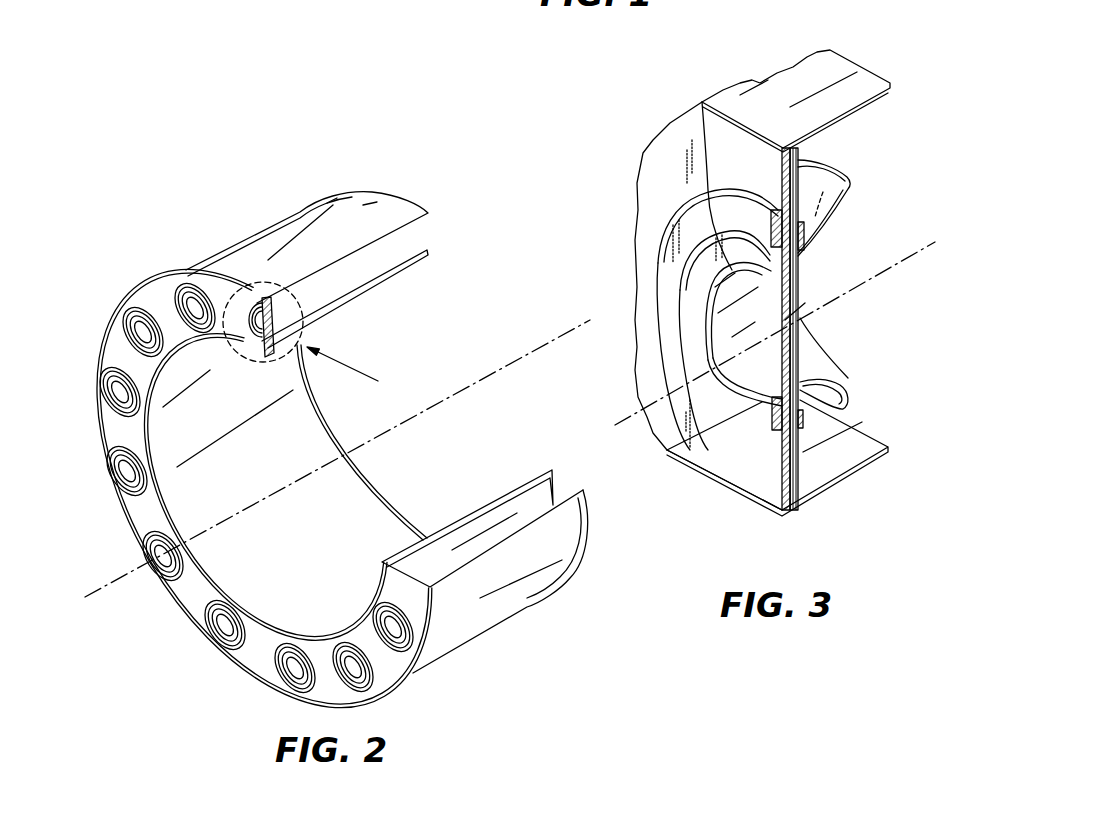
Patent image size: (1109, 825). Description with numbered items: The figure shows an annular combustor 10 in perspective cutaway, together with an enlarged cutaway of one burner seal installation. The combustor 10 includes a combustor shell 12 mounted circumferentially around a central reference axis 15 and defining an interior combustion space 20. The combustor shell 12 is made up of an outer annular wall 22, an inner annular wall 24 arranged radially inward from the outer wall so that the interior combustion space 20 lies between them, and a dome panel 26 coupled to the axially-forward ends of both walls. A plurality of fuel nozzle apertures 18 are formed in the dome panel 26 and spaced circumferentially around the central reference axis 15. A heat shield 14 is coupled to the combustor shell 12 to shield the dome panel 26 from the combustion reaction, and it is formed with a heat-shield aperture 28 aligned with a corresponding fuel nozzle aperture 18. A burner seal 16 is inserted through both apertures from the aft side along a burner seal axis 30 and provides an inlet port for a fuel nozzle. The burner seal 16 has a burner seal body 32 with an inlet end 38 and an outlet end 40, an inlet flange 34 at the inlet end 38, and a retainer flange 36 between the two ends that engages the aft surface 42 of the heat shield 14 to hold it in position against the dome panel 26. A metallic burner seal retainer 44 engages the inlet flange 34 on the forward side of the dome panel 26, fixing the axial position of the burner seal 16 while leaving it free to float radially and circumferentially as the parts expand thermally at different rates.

In FIG. 2, the combustor 10 is at (116, 202).
In FIG. 2, the combustor shell 12 is at (325, 213).
In FIG. 2, the heat shield 14 is at (273, 369).
In FIG. 3, the heat shield 14 is at (814, 183).
In FIG. 2, the central reference axis 15 is at (117, 578).
In FIG. 2, the burner seal 16 is at (247, 287).
In FIG. 3, the burner seal 16 is at (869, 377).
In FIG. 2, the fuel nozzle aperture 18 is at (245, 342).
In FIG. 3, the fuel nozzle aperture 18 is at (774, 439).
In FIG. 2, the interior combustion space 20 is at (325, 261).
In FIG. 3, the interior combustion space 20 is at (806, 281).
In FIG. 2, the outer annular wall 22 is at (298, 233).
In FIG. 3, the outer annular wall 22 is at (832, 64).
In FIG. 2, the inner annular wall 24 is at (398, 260).
In FIG. 3, the inner annular wall 24 is at (865, 455).
In FIG. 2, the dome panel 26 is at (117, 343).
In FIG. 3, the dome panel 26 is at (667, 140).
In FIG. 3, the heat-shield aperture 28 is at (818, 374).
In FIG. 3, the burner seal axis 30 is at (897, 267).
In FIG. 3, the burner seal body 32 is at (800, 266).
In FIG. 3, the inlet flange 34 is at (712, 185).
In FIG. 3, the retainer flange 36 is at (848, 225).
In FIG. 3, the inlet end 38 is at (729, 407).
In FIG. 3, the outlet end 40 is at (869, 406).
In FIG. 3, the aft surface 42 is at (800, 456).
In FIG. 3, the burner seal retainer 44 is at (641, 232).